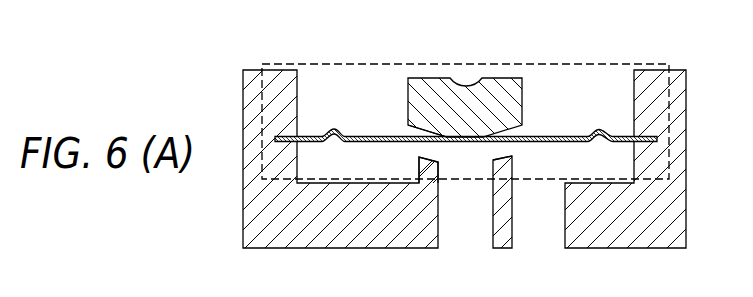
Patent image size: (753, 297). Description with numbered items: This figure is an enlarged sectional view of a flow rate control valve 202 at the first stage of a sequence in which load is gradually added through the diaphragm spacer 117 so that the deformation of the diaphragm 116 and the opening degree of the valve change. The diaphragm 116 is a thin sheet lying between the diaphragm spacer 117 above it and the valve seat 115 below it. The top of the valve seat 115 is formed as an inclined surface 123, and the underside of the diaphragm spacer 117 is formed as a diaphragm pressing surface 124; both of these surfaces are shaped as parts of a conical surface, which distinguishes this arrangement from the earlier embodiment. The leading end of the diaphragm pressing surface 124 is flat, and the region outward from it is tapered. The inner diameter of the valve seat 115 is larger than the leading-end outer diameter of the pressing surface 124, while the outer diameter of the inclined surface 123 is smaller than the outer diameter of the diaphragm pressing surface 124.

The valve seat 115 is at (432, 172).
The diaphragm 116 is at (371, 137).
The diaphragm spacer 117 is at (502, 94).
The inclined surface 123 is at (505, 153).
The diaphragm pressing surface 124 is at (428, 127).
The flow rate control valve 202 is at (598, 64).